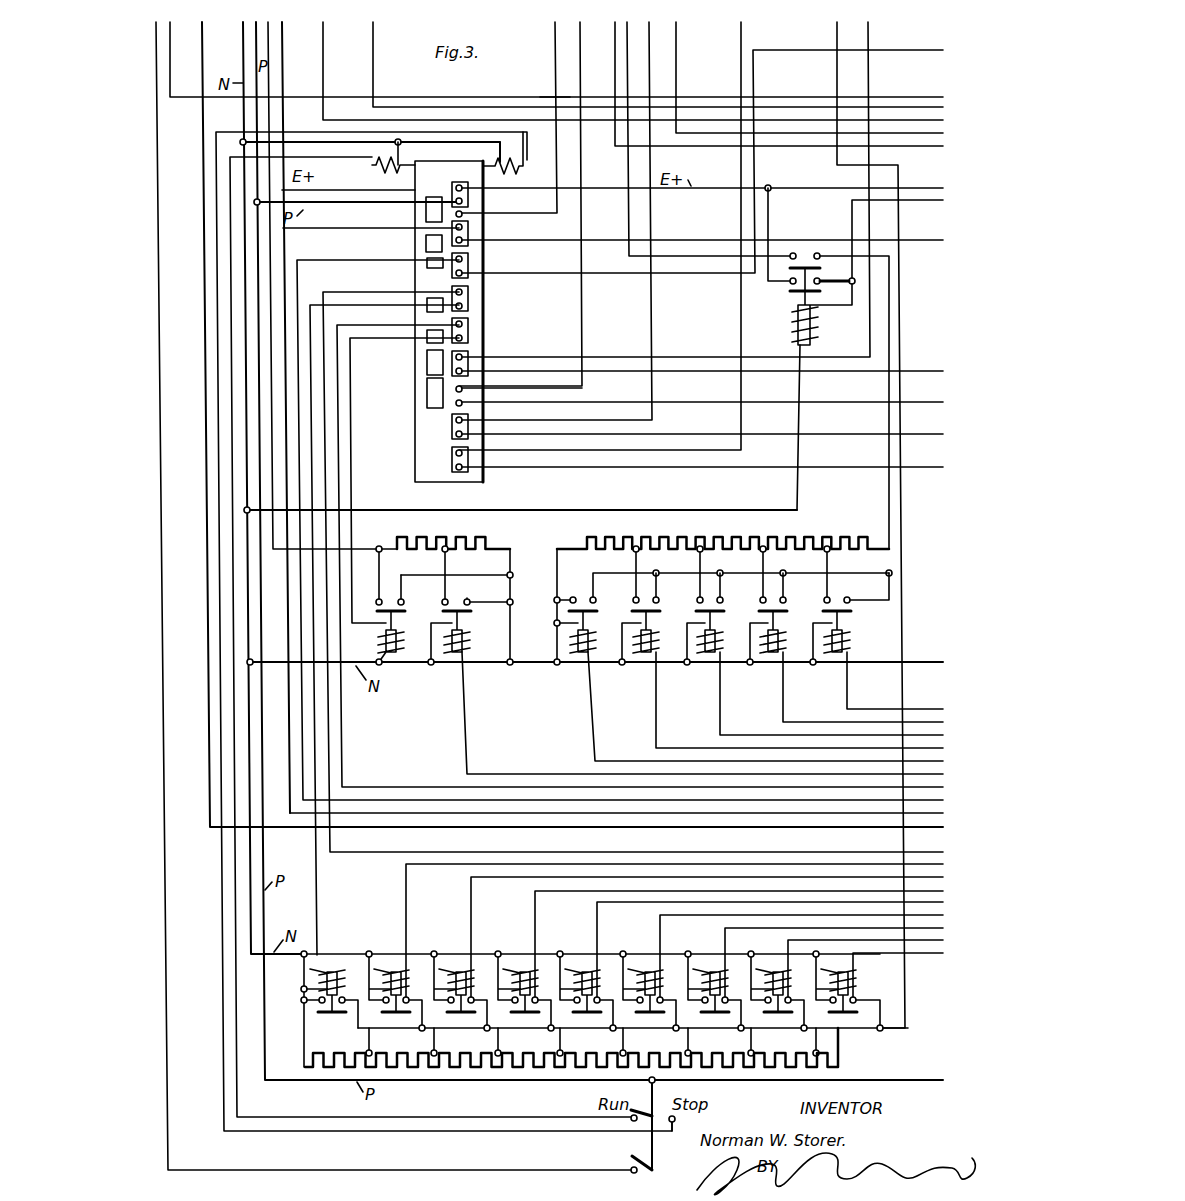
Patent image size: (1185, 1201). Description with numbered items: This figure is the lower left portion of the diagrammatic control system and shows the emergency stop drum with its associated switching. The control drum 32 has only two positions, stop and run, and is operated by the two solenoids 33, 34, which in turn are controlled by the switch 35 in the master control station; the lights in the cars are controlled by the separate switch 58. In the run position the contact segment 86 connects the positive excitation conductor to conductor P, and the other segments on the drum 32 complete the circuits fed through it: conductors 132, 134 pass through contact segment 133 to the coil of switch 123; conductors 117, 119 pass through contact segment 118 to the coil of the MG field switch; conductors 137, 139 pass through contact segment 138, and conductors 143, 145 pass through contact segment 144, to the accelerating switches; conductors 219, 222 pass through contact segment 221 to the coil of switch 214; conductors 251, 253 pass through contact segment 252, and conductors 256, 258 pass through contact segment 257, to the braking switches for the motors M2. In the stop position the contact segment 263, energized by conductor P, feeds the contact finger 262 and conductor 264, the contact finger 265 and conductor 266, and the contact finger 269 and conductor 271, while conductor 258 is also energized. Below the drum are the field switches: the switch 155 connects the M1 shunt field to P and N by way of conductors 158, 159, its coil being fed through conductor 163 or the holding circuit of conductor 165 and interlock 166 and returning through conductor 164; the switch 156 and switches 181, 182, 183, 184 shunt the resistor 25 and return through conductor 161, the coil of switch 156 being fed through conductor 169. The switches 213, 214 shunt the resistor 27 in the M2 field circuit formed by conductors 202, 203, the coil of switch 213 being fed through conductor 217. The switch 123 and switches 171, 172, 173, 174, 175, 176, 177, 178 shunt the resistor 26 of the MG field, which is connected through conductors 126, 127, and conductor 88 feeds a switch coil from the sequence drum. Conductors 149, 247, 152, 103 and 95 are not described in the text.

The conductor 149 is at (929, 86).
The conductor 247 is at (203, 60).
The conductor 202 is at (275, 62).
The conductor 88 is at (920, 122).
The conductor 152 is at (920, 109).
The conductor 264 is at (555, 96).
The conductor 266 is at (578, 50).
The conductor 103 is at (937, 150).
The conductor 158 is at (628, 58).
The conductor 139 is at (652, 348).
The conductor 95 is at (920, 135).
The conductor 145 is at (687, 454).
The conductor 119 is at (599, 358).
The conductor 253 is at (543, 268).
The conductor 126 is at (908, 992).
The solenoid 33 is at (372, 169).
The solenoid 34 is at (527, 167).
The control drum 32 is at (395, 387).
The contact segment 263 is at (426, 212).
The contact segment 86 is at (468, 197).
The contact finger 262 is at (462, 213).
The contact segment 257 is at (468, 230).
The conductor 258 is at (933, 242).
The conductor 256 is at (316, 228).
The contact segment 252 is at (468, 262).
The conductor 251 is at (321, 260).
The contact segment 133 is at (468, 300).
The conductor 132 is at (850, 850).
The conductor 134 is at (318, 892).
The contact segment 221 is at (468, 330).
The conductor 219 is at (343, 748).
The conductor 222 is at (352, 450).
The contact segment 118 is at (468, 363).
The conductor 117 is at (942, 366).
The contact finger 265 is at (462, 389).
The contact finger 269 is at (462, 403).
The conductor 271 is at (939, 403).
The contact segment 138 is at (468, 428).
The conductor 137 is at (939, 433).
The contact segment 144 is at (468, 461).
The conductor 143 is at (939, 463).
The conductor 165 is at (771, 222).
The conductor 163 is at (938, 207).
The interlock 166 is at (797, 292).
The switch 155 is at (777, 331).
The conductor 159 is at (838, 576).
The conductor 164 is at (794, 492).
The resistor 27 is at (488, 542).
The conductor 203 is at (510, 646).
The switch 214 is at (396, 644).
The switch 213 is at (462, 644).
The conductor 217 is at (467, 746).
The resistor 25 is at (798, 542).
The conductor 161 is at (557, 585).
The switch 156 is at (590, 644).
The conductor 169 is at (592, 735).
The switch 181 is at (655, 644).
The switch 182 is at (718, 644).
The switch 183 is at (781, 644).
The switch 184 is at (851, 644).
The conductor 127 is at (304, 980).
The switch 123 is at (336, 986).
The switch 171 is at (400, 986).
The switch 172 is at (465, 986).
The switch 173 is at (529, 986).
The switch 174 is at (591, 986).
The switch 175 is at (654, 986).
The switch 176 is at (719, 986).
The switch 177 is at (782, 986).
The switch 178 is at (847, 986).
The resistor 26 is at (880, 1060).
The switch 35 is at (657, 1114).
The switch 58 is at (640, 1170).